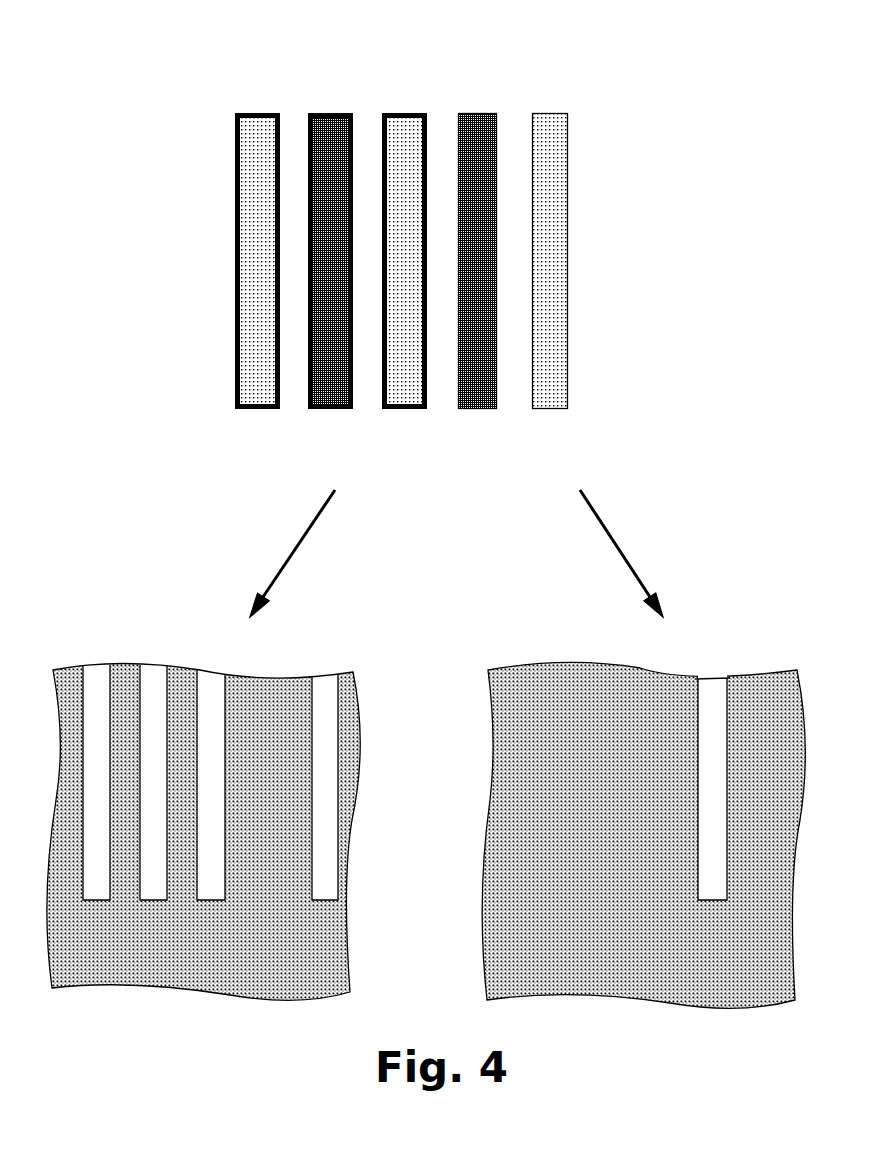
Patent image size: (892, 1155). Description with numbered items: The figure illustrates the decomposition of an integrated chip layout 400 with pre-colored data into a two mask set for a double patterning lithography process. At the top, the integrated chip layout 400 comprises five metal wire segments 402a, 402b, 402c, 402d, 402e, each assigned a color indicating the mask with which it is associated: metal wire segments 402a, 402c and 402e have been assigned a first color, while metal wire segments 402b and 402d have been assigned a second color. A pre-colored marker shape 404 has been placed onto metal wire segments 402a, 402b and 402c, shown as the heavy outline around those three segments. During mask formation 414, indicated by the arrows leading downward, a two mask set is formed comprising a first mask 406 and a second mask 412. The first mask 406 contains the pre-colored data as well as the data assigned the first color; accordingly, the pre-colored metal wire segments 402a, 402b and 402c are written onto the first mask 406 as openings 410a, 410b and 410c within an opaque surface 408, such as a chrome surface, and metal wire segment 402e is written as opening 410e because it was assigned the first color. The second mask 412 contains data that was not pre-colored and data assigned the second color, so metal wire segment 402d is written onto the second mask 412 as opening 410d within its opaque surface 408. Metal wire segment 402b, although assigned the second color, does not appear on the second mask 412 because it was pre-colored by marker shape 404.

The integrated chip layout 400 is at (132, 26).
The metal wire segment 402a is at (258, 420).
The metal wire segment 402b is at (328, 420).
The metal wire segment 402c is at (402, 420).
The metal wire segment 402d is at (475, 420).
The metal wire segment 402e is at (548, 420).
The pre-colored marker shape 404 is at (376, 107).
The first mask 406 is at (70, 638).
The opaque surface 408 is at (368, 692).
The opening 410a is at (104, 914).
The opening 410b is at (159, 914).
The opening 410c is at (218, 913).
The opening 410d is at (718, 913).
The opening 410e is at (340, 910).
The second mask 412 is at (510, 640).
The mask formation 414 is at (705, 542).